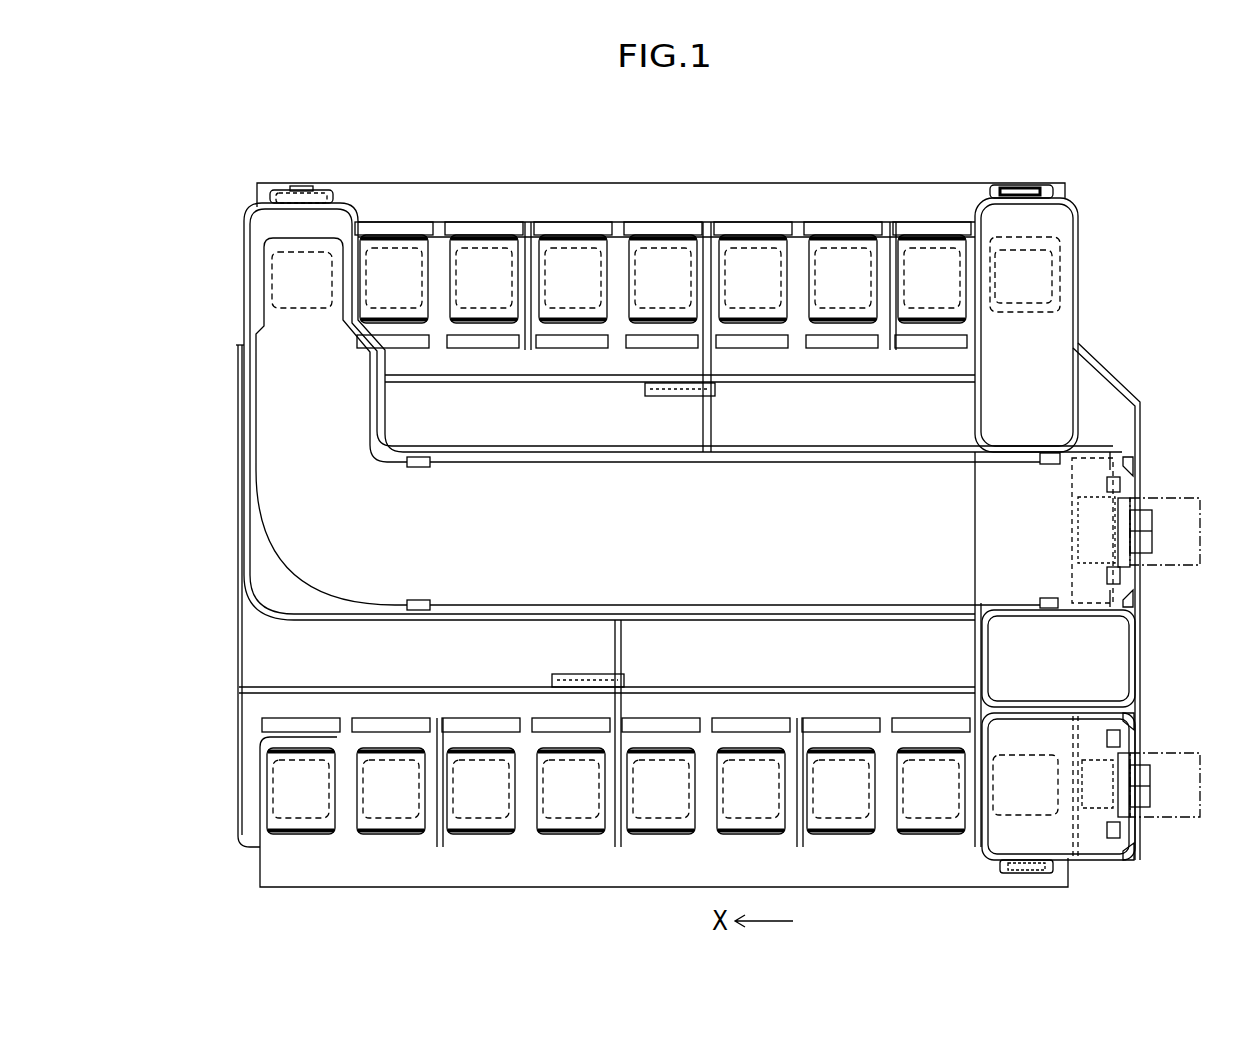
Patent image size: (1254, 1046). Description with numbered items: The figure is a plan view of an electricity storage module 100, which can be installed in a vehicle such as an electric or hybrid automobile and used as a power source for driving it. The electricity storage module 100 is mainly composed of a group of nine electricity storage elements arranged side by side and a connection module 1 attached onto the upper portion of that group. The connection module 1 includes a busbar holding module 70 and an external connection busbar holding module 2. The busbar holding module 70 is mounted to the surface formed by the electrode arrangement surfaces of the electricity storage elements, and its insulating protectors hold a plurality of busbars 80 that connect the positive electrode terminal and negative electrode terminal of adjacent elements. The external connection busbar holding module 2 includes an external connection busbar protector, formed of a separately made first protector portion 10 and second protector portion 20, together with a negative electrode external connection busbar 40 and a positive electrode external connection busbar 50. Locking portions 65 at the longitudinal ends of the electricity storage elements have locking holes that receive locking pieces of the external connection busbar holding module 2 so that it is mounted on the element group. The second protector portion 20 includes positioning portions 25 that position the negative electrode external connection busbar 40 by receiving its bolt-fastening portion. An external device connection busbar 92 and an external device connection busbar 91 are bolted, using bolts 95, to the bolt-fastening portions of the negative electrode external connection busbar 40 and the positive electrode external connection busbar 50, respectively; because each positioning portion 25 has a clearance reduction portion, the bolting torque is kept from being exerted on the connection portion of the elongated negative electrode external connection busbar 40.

The connection module 1 is at (1100, 231).
The external connection busbar holding module 2 is at (1088, 282).
The first protector portion 10 is at (241, 249).
The second protector portion 20 is at (1115, 366).
The positioning portion 25 is at (1140, 460).
The negative electrode external connection busbar 40 is at (272, 392).
The positive electrode external connection busbar 50 is at (1053, 832).
The locking portion 65 is at (595, 196).
The busbar holding module 70 is at (889, 168).
The busbar 80 is at (440, 268).
The external device connection busbar 91 is at (1172, 803).
The external device connection busbar 92 is at (1172, 548).
The bolt 95 is at (1143, 517).
The electricity storage module 100 is at (978, 932).